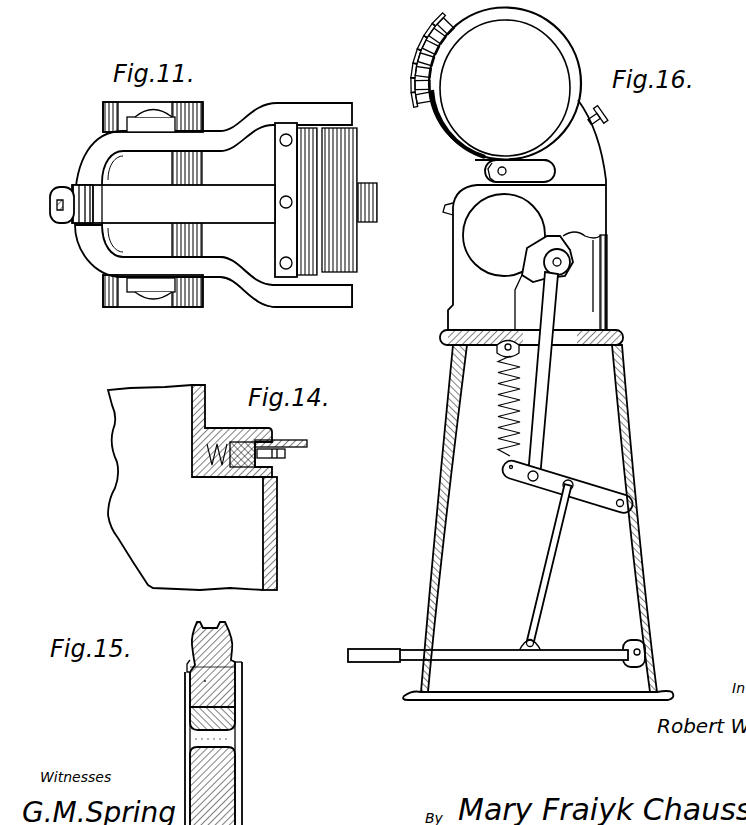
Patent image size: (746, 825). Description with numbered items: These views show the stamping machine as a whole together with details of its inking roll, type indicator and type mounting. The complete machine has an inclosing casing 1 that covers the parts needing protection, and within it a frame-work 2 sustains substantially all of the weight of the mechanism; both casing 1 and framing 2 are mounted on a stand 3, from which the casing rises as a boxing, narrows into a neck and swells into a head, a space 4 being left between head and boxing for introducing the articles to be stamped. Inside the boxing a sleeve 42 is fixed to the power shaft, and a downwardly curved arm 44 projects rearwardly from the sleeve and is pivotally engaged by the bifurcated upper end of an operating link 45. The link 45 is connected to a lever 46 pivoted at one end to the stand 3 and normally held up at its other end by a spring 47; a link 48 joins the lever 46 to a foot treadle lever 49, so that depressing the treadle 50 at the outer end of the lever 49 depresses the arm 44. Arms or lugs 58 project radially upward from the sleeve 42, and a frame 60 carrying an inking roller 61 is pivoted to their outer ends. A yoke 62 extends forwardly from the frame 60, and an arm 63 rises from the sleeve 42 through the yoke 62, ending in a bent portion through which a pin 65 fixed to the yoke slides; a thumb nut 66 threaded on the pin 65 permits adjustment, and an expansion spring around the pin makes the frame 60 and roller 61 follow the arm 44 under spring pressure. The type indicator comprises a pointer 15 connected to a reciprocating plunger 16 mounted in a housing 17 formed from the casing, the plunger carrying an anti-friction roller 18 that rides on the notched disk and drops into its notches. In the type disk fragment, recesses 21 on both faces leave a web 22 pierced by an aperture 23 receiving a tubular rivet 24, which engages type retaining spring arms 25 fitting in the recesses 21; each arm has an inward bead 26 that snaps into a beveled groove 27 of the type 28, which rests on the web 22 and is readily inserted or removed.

In FIG. 16, the casing 1 is at (580, 157).
In FIG. 16, the frame-work 2 is at (575, 318).
In FIG. 16, the stand 3 is at (640, 461).
In FIG. 16, the space 4 is at (533, 172).
In FIG. 14, the pointer 15 is at (303, 440).
In FIG. 14, the plunger 16 is at (246, 470).
In FIG. 14, the housing 17 is at (216, 428).
In FIG. 14, the anti-friction roller 18 is at (285, 456).
In FIG. 15, the recesses 21 is at (241, 770).
In FIG. 15, the web 22 is at (205, 758).
In FIG. 15, the aperture 23 is at (235, 722).
In FIG. 15, the rivet 24 is at (210, 738).
In FIG. 15, the type retaining spring arms 25 is at (194, 700).
In FIG. 15, the bead 26 is at (189, 665).
In FIG. 15, the groove 27 is at (194, 636).
In FIG. 15, the type 28 is at (206, 681).
In FIG. 11, the sleeve 42 is at (183, 243).
In FIG. 11, the arm 44 is at (228, 196).
In FIG. 16, the arm 44 is at (558, 238).
In FIG. 11, the operating link 45 is at (377, 220).
In FIG. 16, the operating link 45 is at (540, 423).
In FIG. 16, the lever 46 is at (594, 503).
In FIG. 16, the spring 47 is at (497, 405).
In FIG. 16, the link 48 is at (546, 566).
In FIG. 16, the foot treadle lever 49 is at (472, 650).
In FIG. 16, the treadle 50 is at (370, 650).
In FIG. 11, the arms or lugs 58 is at (175, 128).
In FIG. 11, the frame 60 is at (270, 113).
In FIG. 11, the inking roller 61 is at (358, 250).
In FIG. 11, the yoke 62 is at (112, 262).
In FIG. 11, the arm 63 is at (98, 213).
In FIG. 11, the pin 65 is at (50, 203).
In FIG. 11, the thumb nut 66 is at (60, 195).